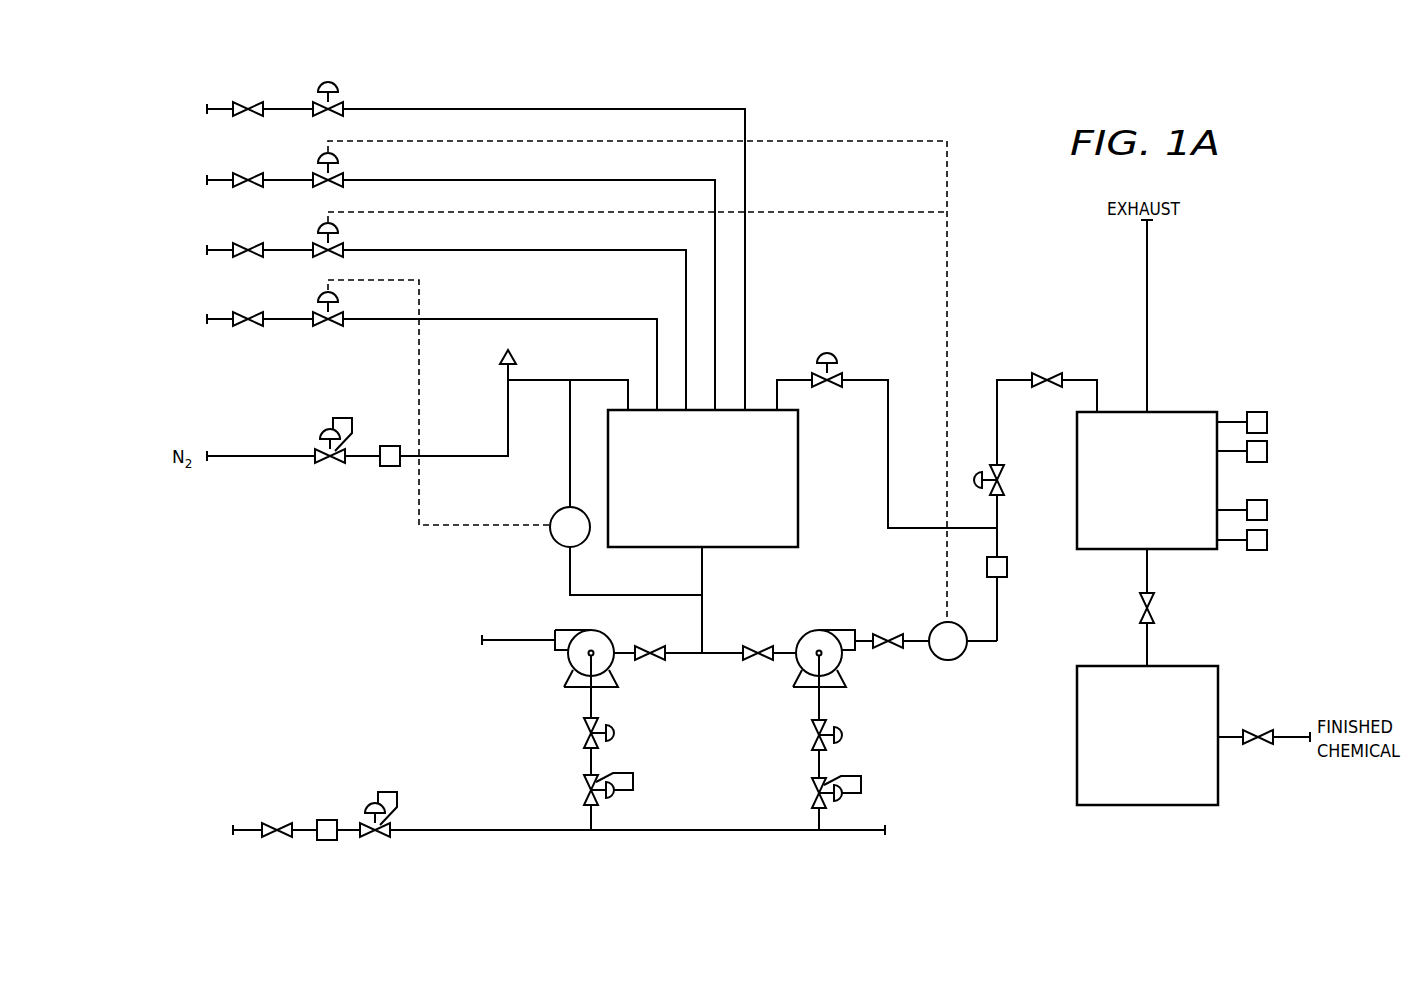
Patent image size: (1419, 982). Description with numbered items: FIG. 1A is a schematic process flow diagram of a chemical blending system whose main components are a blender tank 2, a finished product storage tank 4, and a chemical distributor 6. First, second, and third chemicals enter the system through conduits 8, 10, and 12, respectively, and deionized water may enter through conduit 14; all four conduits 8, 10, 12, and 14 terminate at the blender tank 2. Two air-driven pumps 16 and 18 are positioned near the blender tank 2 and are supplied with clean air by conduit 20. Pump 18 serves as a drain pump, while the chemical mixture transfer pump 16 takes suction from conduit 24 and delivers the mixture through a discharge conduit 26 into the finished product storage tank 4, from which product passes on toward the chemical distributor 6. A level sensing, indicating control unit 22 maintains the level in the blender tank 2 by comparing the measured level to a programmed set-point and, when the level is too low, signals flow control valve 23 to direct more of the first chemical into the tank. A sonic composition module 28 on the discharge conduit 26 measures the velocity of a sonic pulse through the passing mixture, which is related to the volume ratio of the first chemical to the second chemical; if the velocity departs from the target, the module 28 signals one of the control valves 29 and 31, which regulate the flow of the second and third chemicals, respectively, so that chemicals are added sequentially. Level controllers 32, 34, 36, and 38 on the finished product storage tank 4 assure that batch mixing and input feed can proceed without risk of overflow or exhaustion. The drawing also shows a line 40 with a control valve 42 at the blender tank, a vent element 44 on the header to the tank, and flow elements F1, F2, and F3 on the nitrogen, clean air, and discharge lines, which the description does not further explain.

The blender tank 2 is at (696, 518).
The finished product storage tank 4 is at (1195, 410).
The chemical distributor 6 is at (1140, 775).
The conduit 8 is at (557, 318).
The conduit 10 is at (525, 250).
The conduit 12 is at (525, 180).
The conduit 14 is at (525, 109).
The chemical mixture transfer pump 16 is at (798, 632).
The drain pump 18 is at (600, 640).
The conduit 20 is at (497, 828).
The level sensing, indicating control unit 22 is at (556, 513).
The flow control valve 23 is at (314, 317).
The conduit 24 is at (720, 660).
The discharge conduit 26 is at (1005, 378).
The sonic composition module 28 is at (934, 628).
The control valve 29 is at (314, 247).
The control valve 31 is at (314, 177).
The level controller 32 is at (1268, 420).
The level controller 34 is at (1268, 449).
The level controller 36 is at (1268, 515).
The level controller 38 is at (1268, 544).
The overflow line 40 is at (877, 378).
The control valve 42 is at (827, 352).
The relief vent 44 is at (501, 356).
The flow meter F1 is at (390, 468).
The flow meter F2 is at (326, 818).
The flow meter F3 is at (1011, 568).